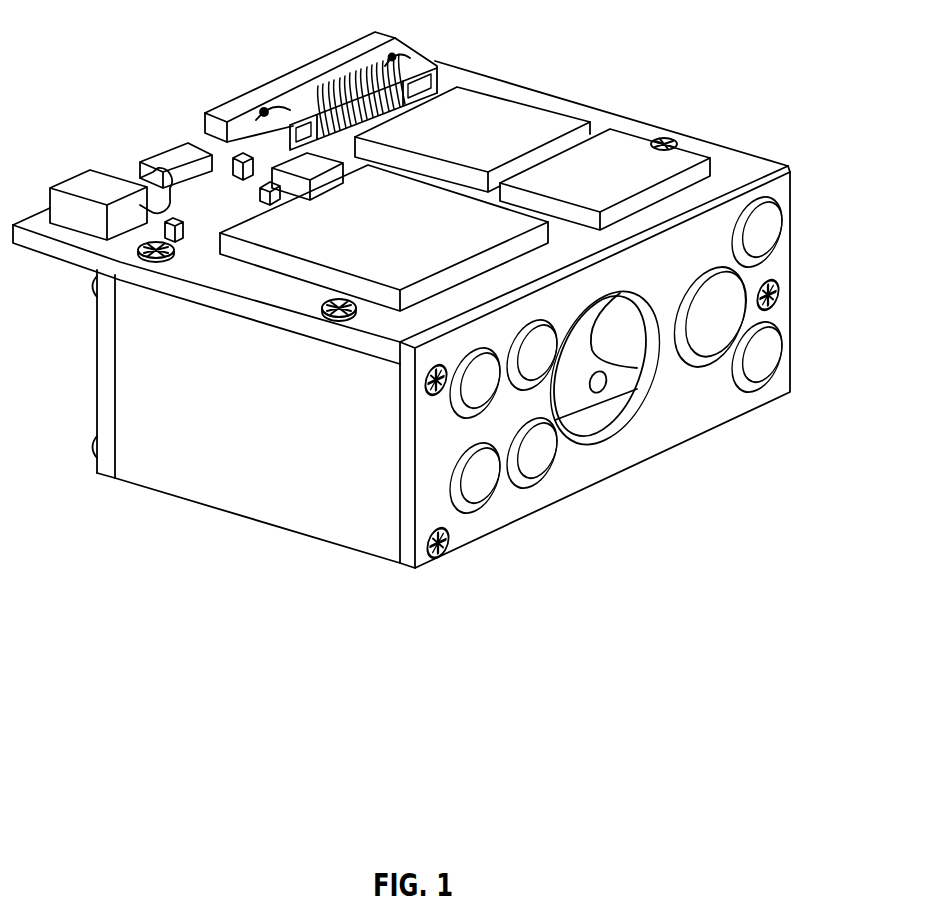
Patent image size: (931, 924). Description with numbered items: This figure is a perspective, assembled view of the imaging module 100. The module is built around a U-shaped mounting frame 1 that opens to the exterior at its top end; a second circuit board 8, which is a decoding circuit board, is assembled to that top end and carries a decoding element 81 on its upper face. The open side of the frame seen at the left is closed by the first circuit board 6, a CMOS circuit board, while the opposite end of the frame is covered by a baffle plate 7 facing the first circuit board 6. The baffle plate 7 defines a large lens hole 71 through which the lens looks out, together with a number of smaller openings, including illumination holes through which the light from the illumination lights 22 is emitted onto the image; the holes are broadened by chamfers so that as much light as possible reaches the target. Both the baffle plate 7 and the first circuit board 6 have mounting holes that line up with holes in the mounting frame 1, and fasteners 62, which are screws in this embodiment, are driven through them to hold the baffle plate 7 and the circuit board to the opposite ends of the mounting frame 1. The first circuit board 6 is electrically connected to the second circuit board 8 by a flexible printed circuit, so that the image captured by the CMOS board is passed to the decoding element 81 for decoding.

The imaging module 100 is at (168, 85).
The mounting frame 1 is at (190, 470).
The first circuit board 6 is at (106, 355).
The fasteners 62 is at (670, 142).
The baffle plate 7 is at (668, 412).
The lens hole 71 is at (593, 417).
The illumination lights 22 is at (523, 458).
The second circuit board 8 is at (562, 107).
The decoding element 81 is at (388, 242).